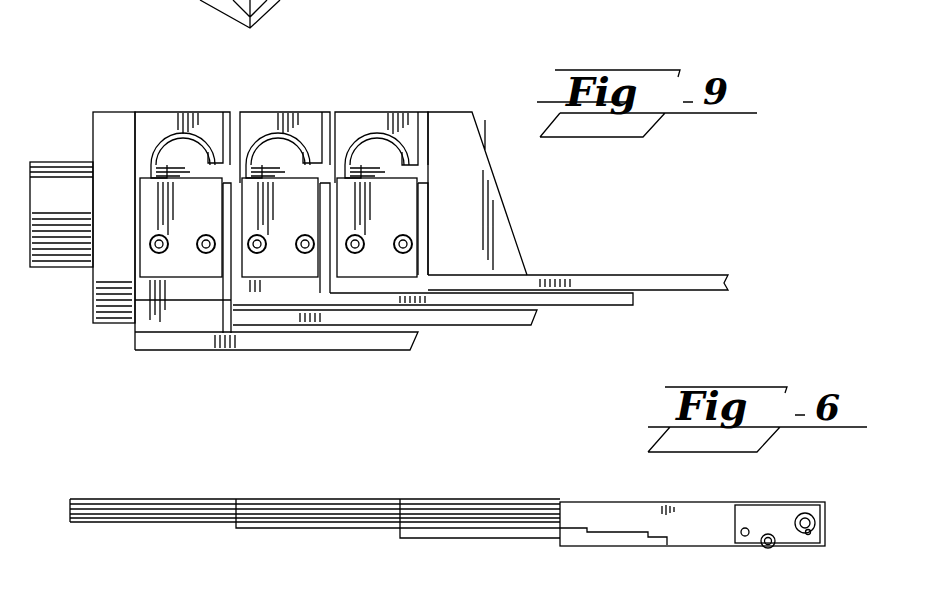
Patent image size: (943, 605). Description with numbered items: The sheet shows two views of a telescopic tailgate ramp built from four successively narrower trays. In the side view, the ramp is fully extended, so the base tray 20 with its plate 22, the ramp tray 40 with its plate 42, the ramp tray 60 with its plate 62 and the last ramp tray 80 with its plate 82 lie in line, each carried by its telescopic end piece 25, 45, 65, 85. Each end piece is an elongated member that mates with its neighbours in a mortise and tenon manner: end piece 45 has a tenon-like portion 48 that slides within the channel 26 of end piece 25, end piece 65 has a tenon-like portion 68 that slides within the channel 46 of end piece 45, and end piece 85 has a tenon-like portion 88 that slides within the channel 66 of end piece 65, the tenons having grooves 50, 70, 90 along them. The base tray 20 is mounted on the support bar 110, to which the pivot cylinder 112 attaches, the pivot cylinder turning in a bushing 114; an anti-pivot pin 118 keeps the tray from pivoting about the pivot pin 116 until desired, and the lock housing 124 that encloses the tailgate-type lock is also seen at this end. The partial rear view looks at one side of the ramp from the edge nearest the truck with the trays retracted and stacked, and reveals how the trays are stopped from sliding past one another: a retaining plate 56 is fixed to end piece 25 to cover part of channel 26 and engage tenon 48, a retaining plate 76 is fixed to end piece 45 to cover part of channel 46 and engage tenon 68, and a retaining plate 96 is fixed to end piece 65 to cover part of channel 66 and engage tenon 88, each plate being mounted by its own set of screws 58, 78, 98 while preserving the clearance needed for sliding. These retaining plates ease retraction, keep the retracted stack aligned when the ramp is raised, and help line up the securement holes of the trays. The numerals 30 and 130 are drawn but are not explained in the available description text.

In FIG. 6, the base tray 20 is at (578, 495).
In FIG. 9, the plate 22 is at (170, 267).
In FIG. 9, the telescopic end piece 25 is at (143, 113).
In FIG. 6, the telescopic end piece 25 is at (597, 508).
In FIG. 9, the channel 26 is at (207, 147).
In FIG. 9, the laser 30 is at (392, 3).
In FIG. 6, the ramp tray 40 is at (455, 495).
In FIG. 9, the plate 42 is at (507, 328).
In FIG. 9, the telescopic end piece 45 is at (250, 108).
In FIG. 6, the telescopic end piece 45 is at (530, 499).
In FIG. 9, the channel 46 is at (323, 112).
In FIG. 9, the tenon-like portion 48 is at (177, 153).
In FIG. 6, the tenon-like portion 48 is at (513, 499).
In FIG. 6, the groove 50 is at (408, 512).
In FIG. 9, the retaining plate 56 is at (140, 350).
In FIG. 9, the screws 58 is at (150, 247).
In FIG. 6, the ramp tray 60 is at (243, 495).
In FIG. 9, the plate 62 is at (607, 312).
In FIG. 9, the telescopic end piece 65 is at (352, 118).
In FIG. 6, the telescopic end piece 65 is at (372, 499).
In FIG. 9, the channel 66 is at (377, 143).
In FIG. 9, the tenon-like portion 68 is at (278, 148).
In FIG. 6, the tenon-like portion 68 is at (322, 499).
In FIG. 6, the groove 70 is at (262, 518).
In FIG. 9, the retaining plate 76 is at (283, 267).
In FIG. 9, the screws 78 is at (257, 252).
In FIG. 6, the ramp tray 80 is at (118, 495).
In FIG. 9, the plate 82 is at (697, 292).
In FIG. 9, the telescopic end piece 85 is at (463, 112).
In FIG. 6, the telescopic end piece 85 is at (208, 499).
In FIG. 9, the tenon-like portion 88 is at (390, 133).
In FIG. 6, the tenon-like portion 88 is at (130, 499).
In FIG. 6, the groove 90 is at (100, 510).
In FIG. 9, the retaining plate 96 is at (368, 265).
In FIG. 9, the screws 98 is at (412, 243).
In FIG. 9, the support bar 110 is at (112, 113).
In FIG. 6, the support bar 110 is at (805, 505).
In FIG. 9, the pivot cylinder 112 is at (47, 187).
In FIG. 6, the pivot cylinder 112 is at (812, 522).
In FIG. 6, the bushing 114 is at (852, 564).
In FIG. 6, the pivot pin 116 is at (740, 534).
In FIG. 6, the anti-pivot pin 118 is at (770, 548).
In FIG. 6, the lock housing 124 is at (616, 530).
In FIG. 9, the lens 130 is at (293, 0).